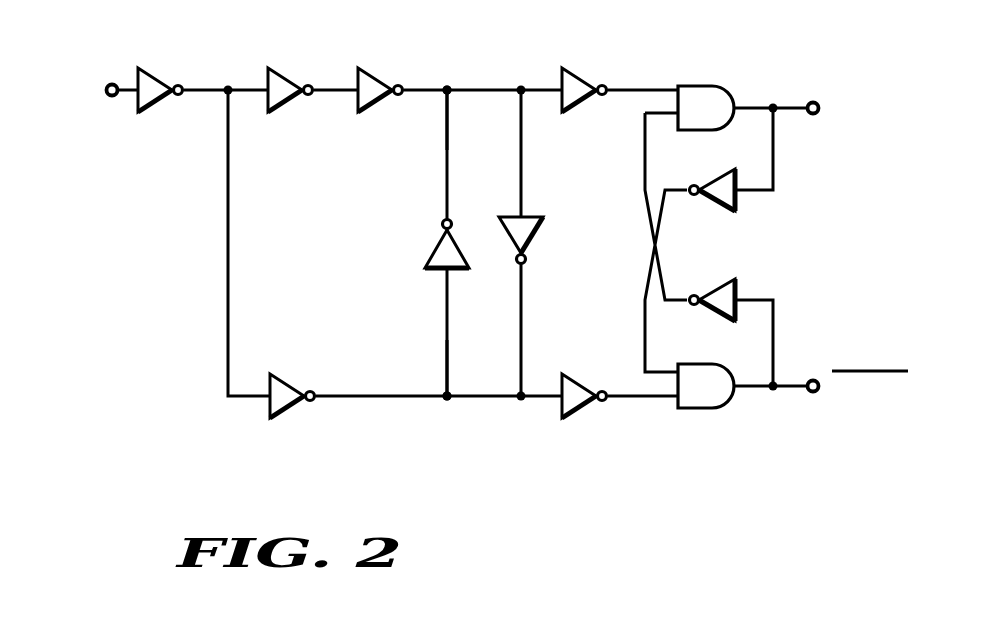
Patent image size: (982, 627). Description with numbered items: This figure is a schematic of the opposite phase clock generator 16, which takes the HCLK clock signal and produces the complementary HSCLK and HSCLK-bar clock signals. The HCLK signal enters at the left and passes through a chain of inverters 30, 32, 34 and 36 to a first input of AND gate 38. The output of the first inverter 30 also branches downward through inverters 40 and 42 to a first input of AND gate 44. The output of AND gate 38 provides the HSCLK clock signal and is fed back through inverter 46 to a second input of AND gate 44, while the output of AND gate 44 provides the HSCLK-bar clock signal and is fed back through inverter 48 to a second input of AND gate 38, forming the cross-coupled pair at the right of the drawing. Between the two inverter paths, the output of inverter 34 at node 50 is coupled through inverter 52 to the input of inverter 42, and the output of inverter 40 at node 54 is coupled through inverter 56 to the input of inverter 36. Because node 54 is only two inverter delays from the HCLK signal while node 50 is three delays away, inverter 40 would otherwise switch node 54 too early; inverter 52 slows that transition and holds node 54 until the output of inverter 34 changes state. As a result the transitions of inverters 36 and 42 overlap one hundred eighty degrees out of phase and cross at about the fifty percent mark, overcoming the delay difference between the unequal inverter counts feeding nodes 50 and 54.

The opposite phase clock generator 16 is at (469, 294).
The inverter 30 is at (157, 74).
The inverter 32 is at (287, 74).
The inverter 34 is at (377, 75).
The inverter 36 is at (581, 74).
The AND gate 38 is at (713, 86).
The inverter 40 is at (288, 373).
The inverter 42 is at (581, 380).
The AND gate 44 is at (713, 410).
The inverter 46 is at (744, 205).
The inverter 48 is at (744, 288).
The node 50 is at (451, 88).
The inverter 52 is at (530, 236).
The node 54 is at (446, 401).
The inverter 56 is at (433, 246).